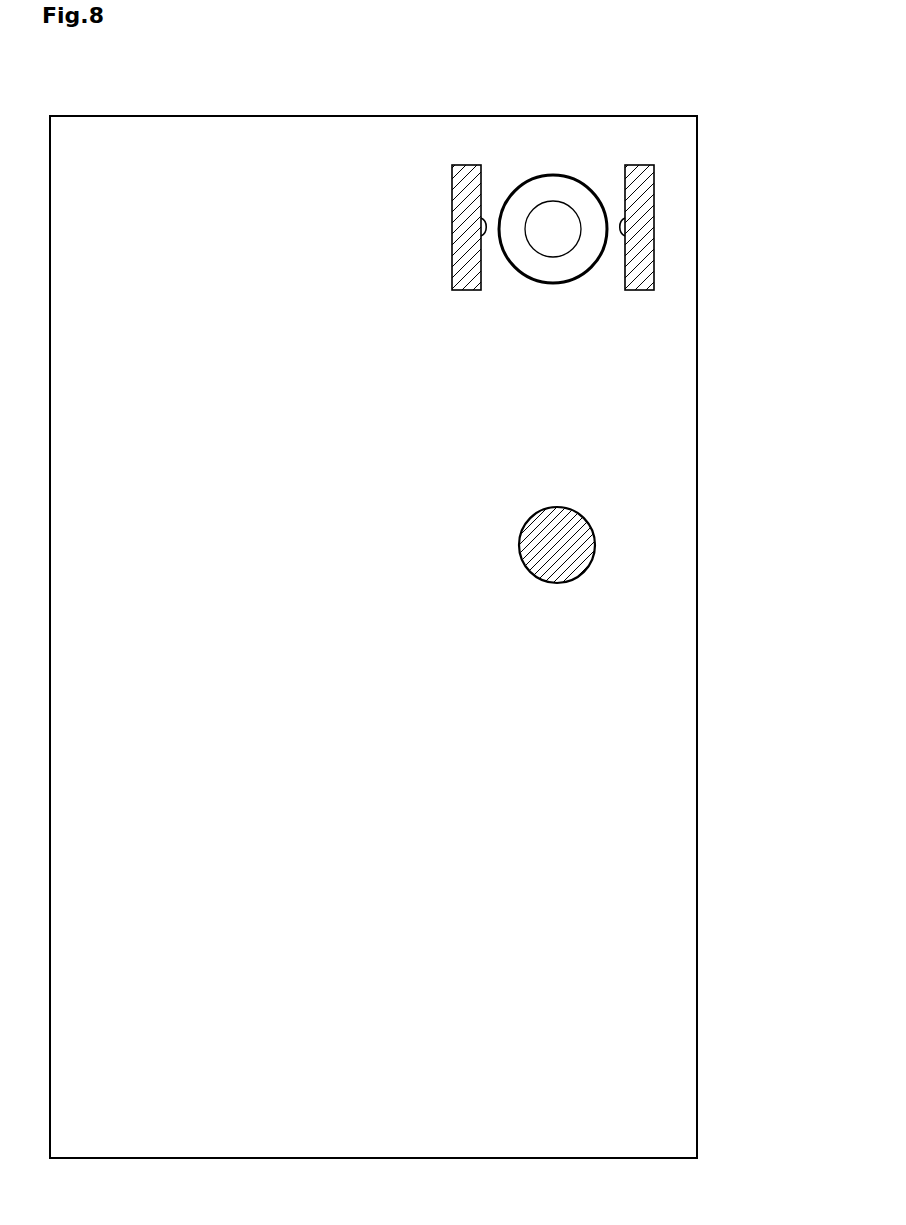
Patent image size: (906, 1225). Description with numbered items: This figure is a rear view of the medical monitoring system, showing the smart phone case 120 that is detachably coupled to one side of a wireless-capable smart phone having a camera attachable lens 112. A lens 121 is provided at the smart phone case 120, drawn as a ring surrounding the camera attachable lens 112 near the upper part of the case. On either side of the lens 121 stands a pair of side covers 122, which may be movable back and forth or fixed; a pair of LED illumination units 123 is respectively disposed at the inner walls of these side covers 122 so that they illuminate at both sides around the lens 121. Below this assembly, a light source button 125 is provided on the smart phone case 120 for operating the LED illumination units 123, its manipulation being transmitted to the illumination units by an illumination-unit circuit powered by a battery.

The smart phone case 120 is at (650, 112).
The lens 121 is at (536, 265).
The camera attachable lens 112 is at (560, 240).
The side covers 122 is at (465, 185).
The LED illumination units 123 is at (482, 227).
The light source button 125 is at (580, 547).